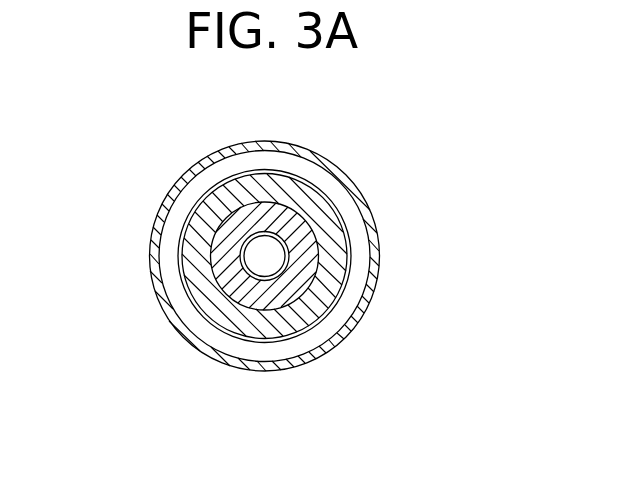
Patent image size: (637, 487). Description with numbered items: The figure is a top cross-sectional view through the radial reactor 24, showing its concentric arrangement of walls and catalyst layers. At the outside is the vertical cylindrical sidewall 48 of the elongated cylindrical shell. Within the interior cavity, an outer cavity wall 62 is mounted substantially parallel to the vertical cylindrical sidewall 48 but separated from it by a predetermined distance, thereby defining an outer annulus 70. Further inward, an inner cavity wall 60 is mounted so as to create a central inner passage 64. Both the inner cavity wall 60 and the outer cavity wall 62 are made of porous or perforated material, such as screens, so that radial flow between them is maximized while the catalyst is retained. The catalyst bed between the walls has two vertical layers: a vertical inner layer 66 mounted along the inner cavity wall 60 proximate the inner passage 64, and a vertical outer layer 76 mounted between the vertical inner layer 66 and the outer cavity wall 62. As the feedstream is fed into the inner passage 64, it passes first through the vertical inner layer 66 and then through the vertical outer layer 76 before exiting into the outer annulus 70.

The radial reactor 24 is at (416, 164).
The vertical cylindrical sidewall 48 is at (150, 308).
The inner cavity wall 60 is at (296, 214).
The outer cavity wall 62 is at (350, 242).
The inner passage 64 is at (252, 255).
The vertical inner layer 66 is at (364, 312).
The outer annulus 70 is at (360, 267).
The vertical outer layer 76 is at (292, 318).